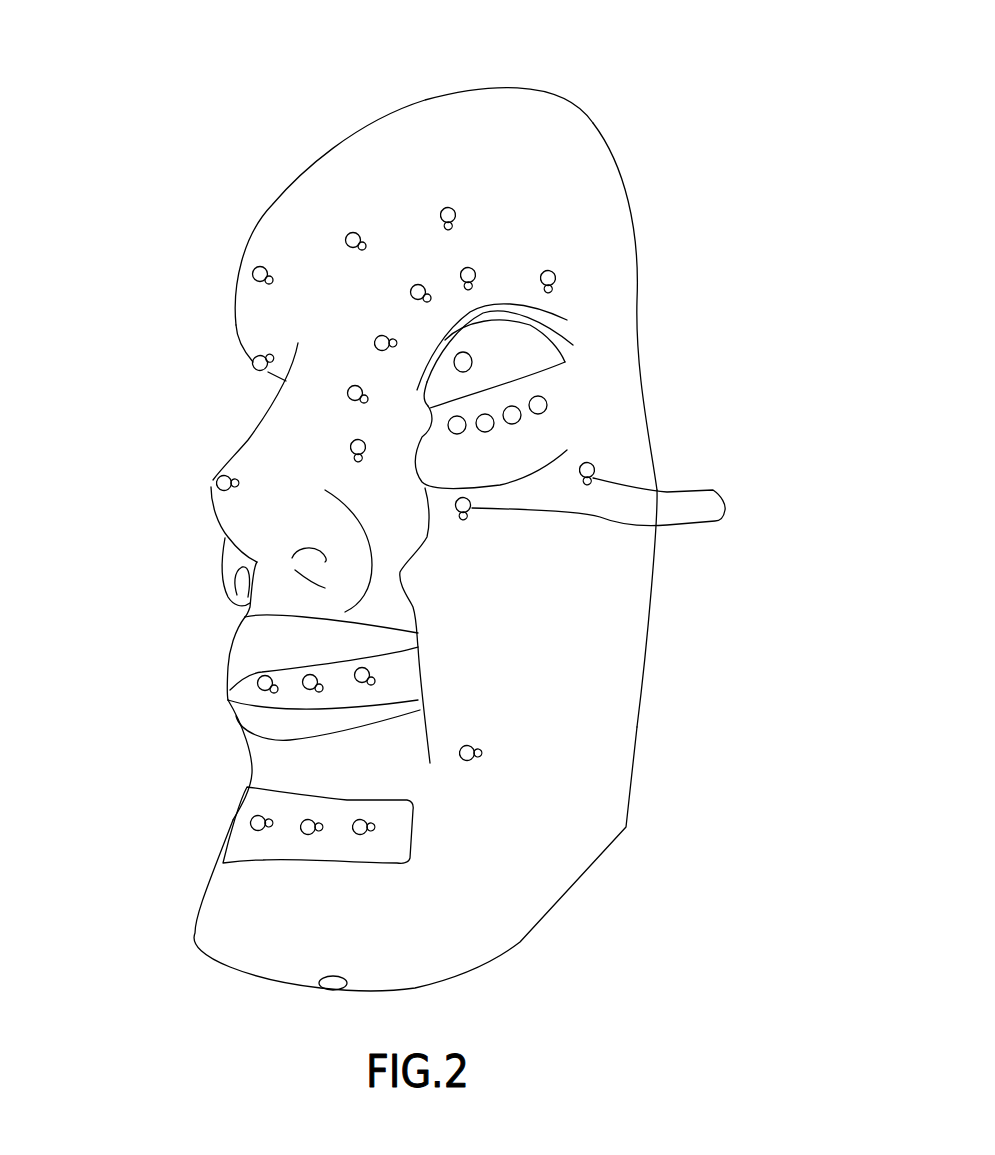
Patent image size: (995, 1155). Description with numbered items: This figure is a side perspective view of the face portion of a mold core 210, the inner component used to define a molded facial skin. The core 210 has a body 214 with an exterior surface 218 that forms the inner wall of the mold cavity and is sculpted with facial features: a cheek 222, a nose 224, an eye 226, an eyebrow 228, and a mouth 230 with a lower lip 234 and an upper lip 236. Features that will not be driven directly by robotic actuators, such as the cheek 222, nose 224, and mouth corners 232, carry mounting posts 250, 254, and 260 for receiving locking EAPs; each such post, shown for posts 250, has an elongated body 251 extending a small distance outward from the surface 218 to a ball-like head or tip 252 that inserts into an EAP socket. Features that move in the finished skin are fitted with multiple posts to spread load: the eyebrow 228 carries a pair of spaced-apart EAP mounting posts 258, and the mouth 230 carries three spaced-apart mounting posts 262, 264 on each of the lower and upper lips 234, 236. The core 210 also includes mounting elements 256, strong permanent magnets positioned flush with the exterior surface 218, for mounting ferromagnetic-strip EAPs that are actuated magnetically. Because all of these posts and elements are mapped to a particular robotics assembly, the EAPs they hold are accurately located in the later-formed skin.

The mold core 210 is at (722, 90).
The body 214 is at (637, 244).
The exterior surface 218 is at (597, 735).
The cheek 222 is at (570, 548).
The nose 224 is at (257, 447).
The eye 226 is at (625, 352).
The eyebrow 228 is at (502, 198).
The mouth 230 is at (172, 806).
The mouth corners 232 is at (430, 747).
The lower lip 234 is at (258, 843).
The upper lip 236 is at (230, 706).
The mounting post 250 is at (619, 506).
The elongated body 251 is at (580, 482).
The head or tip 252 is at (593, 467).
The mounting post 254 is at (213, 482).
The mounting elements 256 is at (487, 425).
The EAP mounting posts 258 is at (360, 233).
The mounting post 260 is at (477, 756).
The mounting posts 262 is at (320, 833).
The mounting posts 264 is at (355, 668).